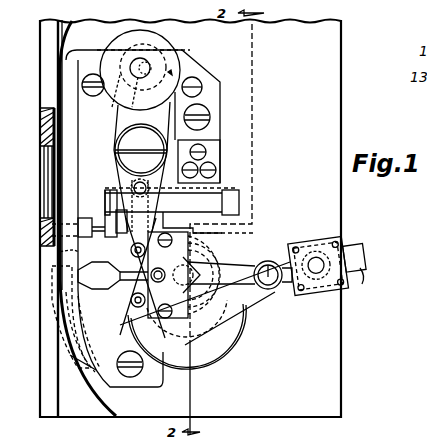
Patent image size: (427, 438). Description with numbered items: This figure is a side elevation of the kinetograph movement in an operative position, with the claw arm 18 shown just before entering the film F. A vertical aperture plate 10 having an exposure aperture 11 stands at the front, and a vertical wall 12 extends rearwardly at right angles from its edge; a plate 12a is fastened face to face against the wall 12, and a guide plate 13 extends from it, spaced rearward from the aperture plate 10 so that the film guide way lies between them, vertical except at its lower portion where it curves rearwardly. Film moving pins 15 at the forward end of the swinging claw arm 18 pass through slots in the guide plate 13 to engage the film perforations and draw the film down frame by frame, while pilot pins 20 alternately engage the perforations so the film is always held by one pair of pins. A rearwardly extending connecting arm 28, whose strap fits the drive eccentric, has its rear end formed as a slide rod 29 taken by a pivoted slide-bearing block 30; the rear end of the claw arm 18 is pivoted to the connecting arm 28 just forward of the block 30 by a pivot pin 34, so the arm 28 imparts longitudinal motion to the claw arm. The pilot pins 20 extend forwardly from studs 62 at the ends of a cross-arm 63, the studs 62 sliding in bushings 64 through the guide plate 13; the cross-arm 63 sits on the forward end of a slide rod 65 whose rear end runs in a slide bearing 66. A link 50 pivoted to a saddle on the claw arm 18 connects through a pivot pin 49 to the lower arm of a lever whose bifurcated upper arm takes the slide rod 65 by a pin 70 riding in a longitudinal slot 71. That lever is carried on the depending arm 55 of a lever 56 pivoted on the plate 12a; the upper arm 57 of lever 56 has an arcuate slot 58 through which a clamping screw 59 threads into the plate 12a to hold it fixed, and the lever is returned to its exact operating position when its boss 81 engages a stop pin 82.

The vertical aperture plate 10 is at (43, 58).
The exposure aperture 11 is at (44, 186).
The vertical wall 12 is at (320, 110).
The frame plate 12a is at (155, 378).
The guide plate 13 is at (78, 78).
The film moving pins 15 is at (62, 296).
The claw arm 18 is at (228, 335).
The pilot pins 20 is at (60, 253).
The connecting arm 28 is at (250, 318).
The slide rod 29 is at (360, 275).
The pivoted slide-bearing block 30 is at (312, 290).
The pivot pin 34 is at (268, 258).
The pivot pin 49 is at (132, 300).
The link 50 is at (131, 292).
The depending arm 55 is at (118, 236).
The lever 56 is at (220, 130).
The upper arm 57 is at (212, 104).
The arcuate slot 58 is at (190, 52).
The clamping screw 59 is at (118, 105).
The studs 62 is at (106, 221).
The cross-arm 63 is at (108, 194).
The bushings 64 is at (80, 219).
The slide rod 65 is at (112, 169).
The slide bearing 66 is at (230, 188).
The pin 70 is at (142, 139).
The longitudinal slot 71 is at (140, 195).
The boss 81 is at (165, 112).
The stop pin 82 is at (193, 86).
The film F is at (73, 45).